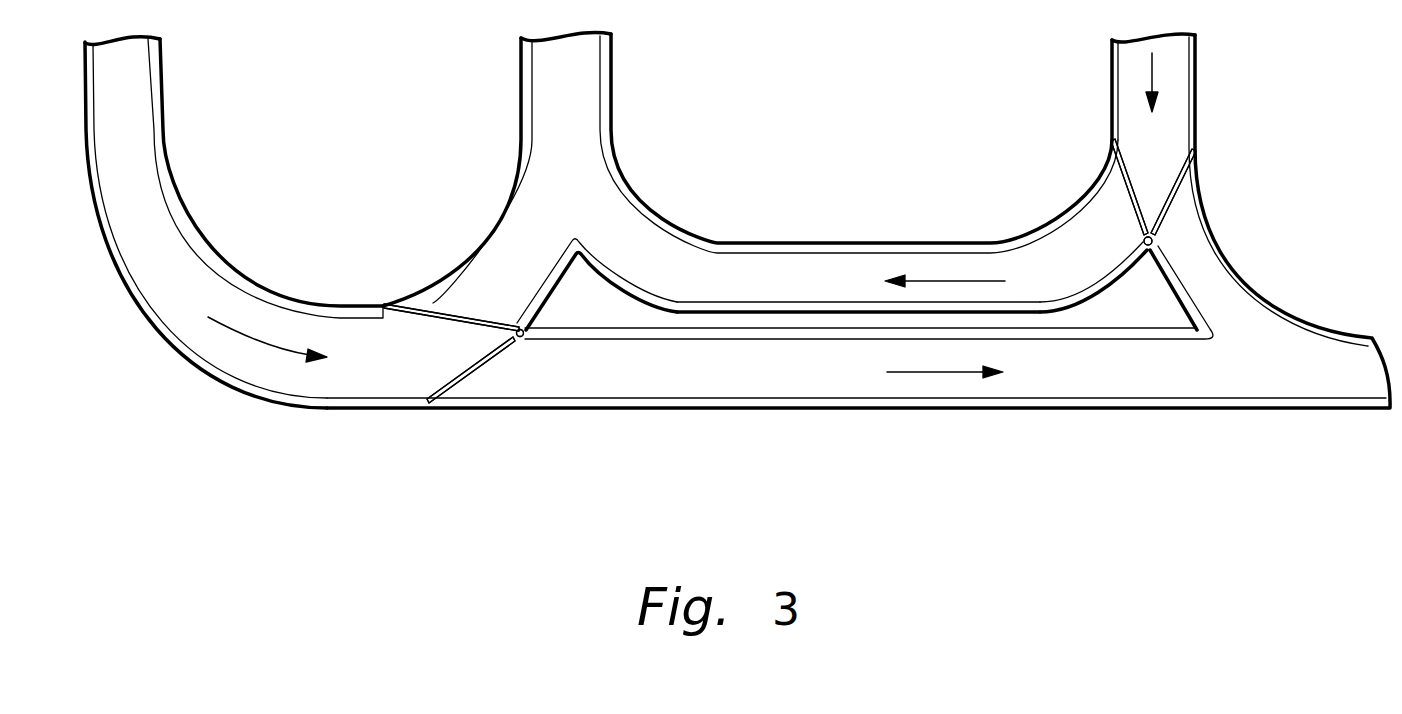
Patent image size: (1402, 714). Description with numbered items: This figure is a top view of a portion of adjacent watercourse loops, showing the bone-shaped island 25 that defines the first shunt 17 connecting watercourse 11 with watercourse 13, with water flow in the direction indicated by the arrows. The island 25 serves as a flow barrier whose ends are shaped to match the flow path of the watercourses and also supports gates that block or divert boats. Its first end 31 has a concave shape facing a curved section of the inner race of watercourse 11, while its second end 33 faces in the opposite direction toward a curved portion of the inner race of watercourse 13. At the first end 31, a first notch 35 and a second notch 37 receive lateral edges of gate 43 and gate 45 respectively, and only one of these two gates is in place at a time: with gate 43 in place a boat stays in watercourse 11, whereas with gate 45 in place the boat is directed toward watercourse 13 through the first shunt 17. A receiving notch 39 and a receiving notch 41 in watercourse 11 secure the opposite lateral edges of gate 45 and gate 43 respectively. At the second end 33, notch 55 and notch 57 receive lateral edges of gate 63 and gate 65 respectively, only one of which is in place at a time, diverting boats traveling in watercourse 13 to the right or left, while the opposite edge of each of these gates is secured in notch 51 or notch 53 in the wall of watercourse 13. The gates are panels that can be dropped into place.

The watercourse 11 is at (145, 189).
The watercourse 13 is at (1170, 79).
The first shunt 17 is at (793, 364).
The island 25 is at (843, 283).
The first end 31 is at (560, 297).
The second end 33 is at (1167, 295).
The first notch 35 is at (522, 342).
The second notch 37 is at (520, 328).
The receiving notch 39 is at (384, 306).
The receiving notch 41 is at (432, 402).
The gate 43 is at (458, 384).
The gate 45 is at (438, 318).
The notch 51 is at (1196, 150).
The notch 53 is at (1113, 141).
The notch 55 is at (1155, 238).
The notch 57 is at (1138, 240).
The gate 63 is at (1165, 208).
The gate 65 is at (1120, 188).